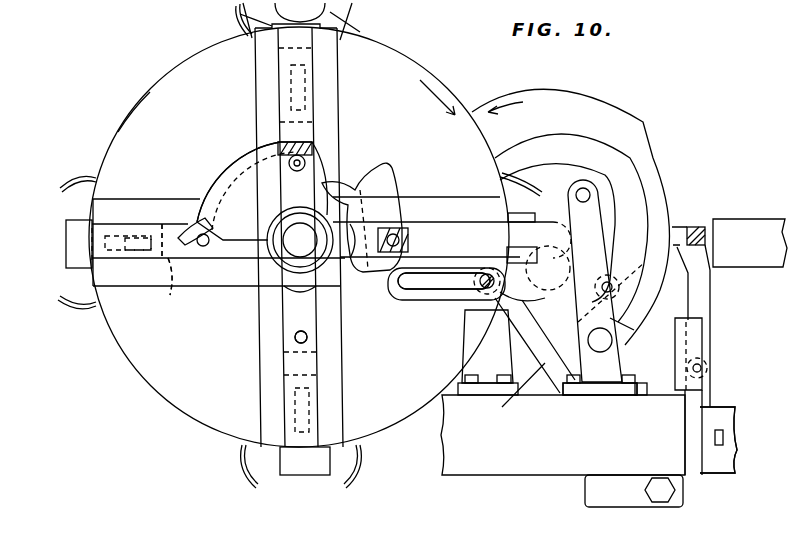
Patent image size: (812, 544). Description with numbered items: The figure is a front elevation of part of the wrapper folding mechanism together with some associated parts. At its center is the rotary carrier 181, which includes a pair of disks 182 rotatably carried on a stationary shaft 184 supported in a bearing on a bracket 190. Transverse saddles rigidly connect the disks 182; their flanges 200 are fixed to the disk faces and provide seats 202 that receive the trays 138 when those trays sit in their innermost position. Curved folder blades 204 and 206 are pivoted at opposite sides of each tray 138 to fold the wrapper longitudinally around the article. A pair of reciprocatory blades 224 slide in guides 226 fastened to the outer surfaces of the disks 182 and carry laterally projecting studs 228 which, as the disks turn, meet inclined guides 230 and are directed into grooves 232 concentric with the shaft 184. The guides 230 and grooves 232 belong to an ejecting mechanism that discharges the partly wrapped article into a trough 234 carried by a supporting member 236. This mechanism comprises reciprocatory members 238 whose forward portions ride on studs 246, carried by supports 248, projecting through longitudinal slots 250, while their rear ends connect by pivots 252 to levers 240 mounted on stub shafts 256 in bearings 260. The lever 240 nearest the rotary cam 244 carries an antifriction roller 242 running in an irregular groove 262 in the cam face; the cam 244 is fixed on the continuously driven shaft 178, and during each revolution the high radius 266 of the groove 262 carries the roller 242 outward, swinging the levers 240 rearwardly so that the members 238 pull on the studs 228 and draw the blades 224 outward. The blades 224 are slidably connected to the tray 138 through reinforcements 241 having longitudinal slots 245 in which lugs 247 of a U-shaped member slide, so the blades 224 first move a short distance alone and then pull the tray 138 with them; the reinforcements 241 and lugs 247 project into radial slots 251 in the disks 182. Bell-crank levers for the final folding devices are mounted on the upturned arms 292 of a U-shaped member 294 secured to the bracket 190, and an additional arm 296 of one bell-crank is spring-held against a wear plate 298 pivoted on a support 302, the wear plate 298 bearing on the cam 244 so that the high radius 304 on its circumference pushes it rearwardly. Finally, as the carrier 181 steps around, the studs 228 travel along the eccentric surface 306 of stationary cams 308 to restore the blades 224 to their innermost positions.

The tray 138 is at (246, 24).
The shaft 178 is at (540, 247).
The rotary carrier 181 is at (150, 97).
The disk 182 is at (130, 126).
The stationary shaft 184 is at (311, 240).
The bracket 190 is at (516, 471).
The flange 200 is at (262, 34).
The seat 202 is at (343, 32).
The curved folder blade 204 is at (68, 304).
The curved folder blade 206 is at (70, 184).
The reciprocatory blade 224 is at (70, 239).
The guide 226 is at (258, 107).
The stud 228 is at (291, 171).
The inclined guide 230 is at (356, 182).
The groove 232 is at (395, 253).
The trough 234 is at (750, 243).
The supporting member 236 is at (730, 457).
The reciprocatory member 238 is at (474, 230).
The lever 240 is at (648, 336).
The reinforcement 241 is at (170, 286).
The antifriction roller 242 is at (612, 281).
The rotary cam 244 is at (664, 196).
The longitudinal slot 245 is at (114, 232).
The stud 246 is at (480, 289).
The lug 247 is at (126, 251).
The support 248 is at (486, 384).
The longitudinal slot 250 is at (410, 298).
The radial slot 251 is at (292, 340).
The pivot 252 is at (584, 186).
The stub shaft 256 is at (600, 355).
The bearing 260 is at (570, 397).
The irregular groove 262 is at (614, 272).
The high radius 266 is at (630, 172).
The upturned arm 292 is at (700, 334).
The U-shaped member 294 is at (700, 405).
The arm 296 is at (708, 226).
The wear plate 298 is at (712, 288).
The support 302 is at (712, 371).
The high radius 304 is at (625, 114).
The eccentric surface 306 is at (250, 160).
The stationary cam 308 is at (224, 170).